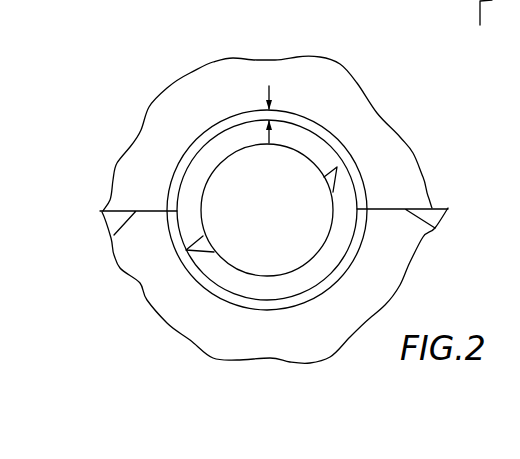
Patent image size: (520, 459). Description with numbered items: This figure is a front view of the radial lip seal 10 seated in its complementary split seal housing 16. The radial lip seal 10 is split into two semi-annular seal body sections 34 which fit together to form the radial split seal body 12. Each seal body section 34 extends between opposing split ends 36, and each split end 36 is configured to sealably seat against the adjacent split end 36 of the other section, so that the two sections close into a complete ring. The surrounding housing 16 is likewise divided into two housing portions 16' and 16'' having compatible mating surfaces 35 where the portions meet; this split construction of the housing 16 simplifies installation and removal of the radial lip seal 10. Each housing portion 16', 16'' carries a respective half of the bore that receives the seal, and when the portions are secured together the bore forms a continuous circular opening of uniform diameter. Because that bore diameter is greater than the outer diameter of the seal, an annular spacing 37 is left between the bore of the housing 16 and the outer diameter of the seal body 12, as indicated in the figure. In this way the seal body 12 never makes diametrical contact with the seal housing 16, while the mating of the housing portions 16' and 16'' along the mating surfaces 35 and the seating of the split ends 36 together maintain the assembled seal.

The radial lip seal 10 is at (446, 137).
The radial split seal body 12 is at (198, 290).
The housing 16 is at (90, 184).
The housing portion 16' is at (173, 120).
The housing portion 16'' is at (328, 324).
The seal body section 34 is at (287, 147).
The mating surface 35 is at (133, 210).
The split end 36 is at (201, 232).
The annular spacing 37 is at (276, 111).